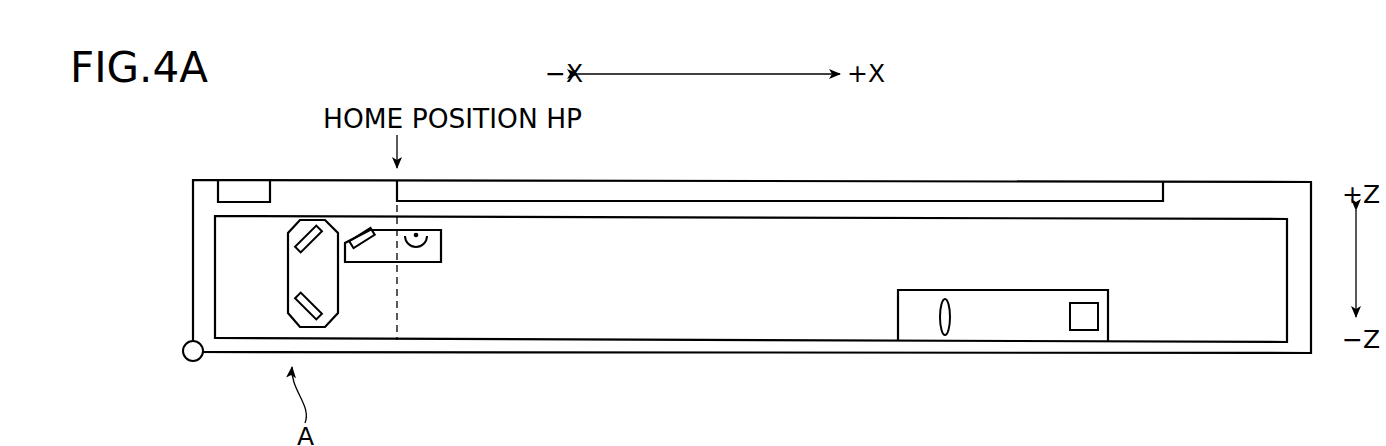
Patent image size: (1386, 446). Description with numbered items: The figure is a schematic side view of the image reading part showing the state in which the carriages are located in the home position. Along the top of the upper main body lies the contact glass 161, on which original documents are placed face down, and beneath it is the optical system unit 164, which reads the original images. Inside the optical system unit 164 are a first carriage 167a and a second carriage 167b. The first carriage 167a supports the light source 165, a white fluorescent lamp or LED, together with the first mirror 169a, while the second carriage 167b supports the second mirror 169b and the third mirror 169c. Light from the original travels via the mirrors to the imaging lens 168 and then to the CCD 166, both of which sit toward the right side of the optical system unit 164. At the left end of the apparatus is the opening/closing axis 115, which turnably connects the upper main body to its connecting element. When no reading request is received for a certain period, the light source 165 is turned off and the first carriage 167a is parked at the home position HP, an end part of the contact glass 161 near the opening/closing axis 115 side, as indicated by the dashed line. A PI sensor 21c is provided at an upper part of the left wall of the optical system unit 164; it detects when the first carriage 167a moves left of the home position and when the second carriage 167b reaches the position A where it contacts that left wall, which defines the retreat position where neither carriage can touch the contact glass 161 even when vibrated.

The PI sensor 21c is at (218, 180).
The opening/closing axis 115 is at (183, 351).
The contact glass 161 is at (973, 192).
The optical system unit 164 is at (837, 277).
The light source 165 is at (416, 247).
The CCD 166 is at (1083, 322).
The first carriage 167a is at (442, 246).
The second carriage 167b is at (288, 248).
The imaging lens 168 is at (945, 300).
The first mirror 169a is at (363, 248).
The second mirror 169b is at (305, 232).
The third mirror 169c is at (298, 318).